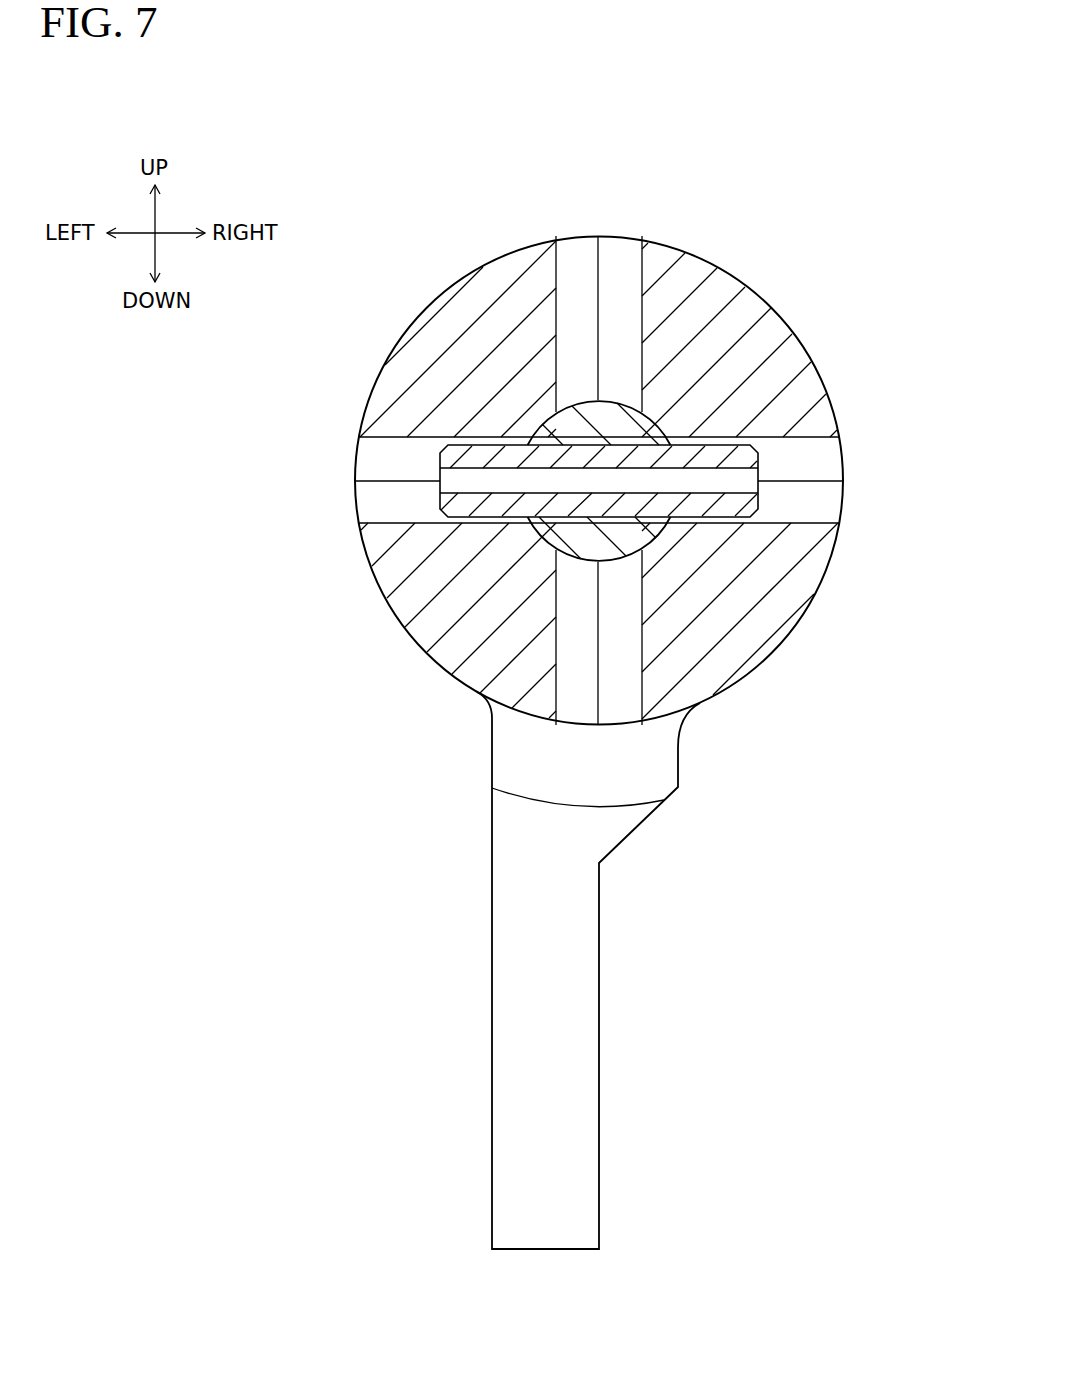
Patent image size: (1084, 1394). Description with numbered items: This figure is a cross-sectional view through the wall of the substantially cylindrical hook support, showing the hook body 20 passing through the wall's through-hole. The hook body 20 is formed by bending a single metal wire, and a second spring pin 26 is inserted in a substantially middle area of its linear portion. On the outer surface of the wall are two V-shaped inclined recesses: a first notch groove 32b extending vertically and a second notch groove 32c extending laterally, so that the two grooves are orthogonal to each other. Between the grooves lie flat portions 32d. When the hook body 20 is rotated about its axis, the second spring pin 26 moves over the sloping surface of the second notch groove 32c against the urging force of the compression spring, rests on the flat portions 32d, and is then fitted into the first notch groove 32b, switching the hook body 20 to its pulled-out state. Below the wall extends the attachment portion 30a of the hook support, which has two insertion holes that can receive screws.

The hook body 20 is at (610, 427).
The second spring pin 26 is at (740, 503).
The attachment portion 30a is at (577, 1037).
The first notch groove 32b is at (617, 258).
The second notch groove 32c is at (830, 460).
The flat portions 32d is at (437, 333).